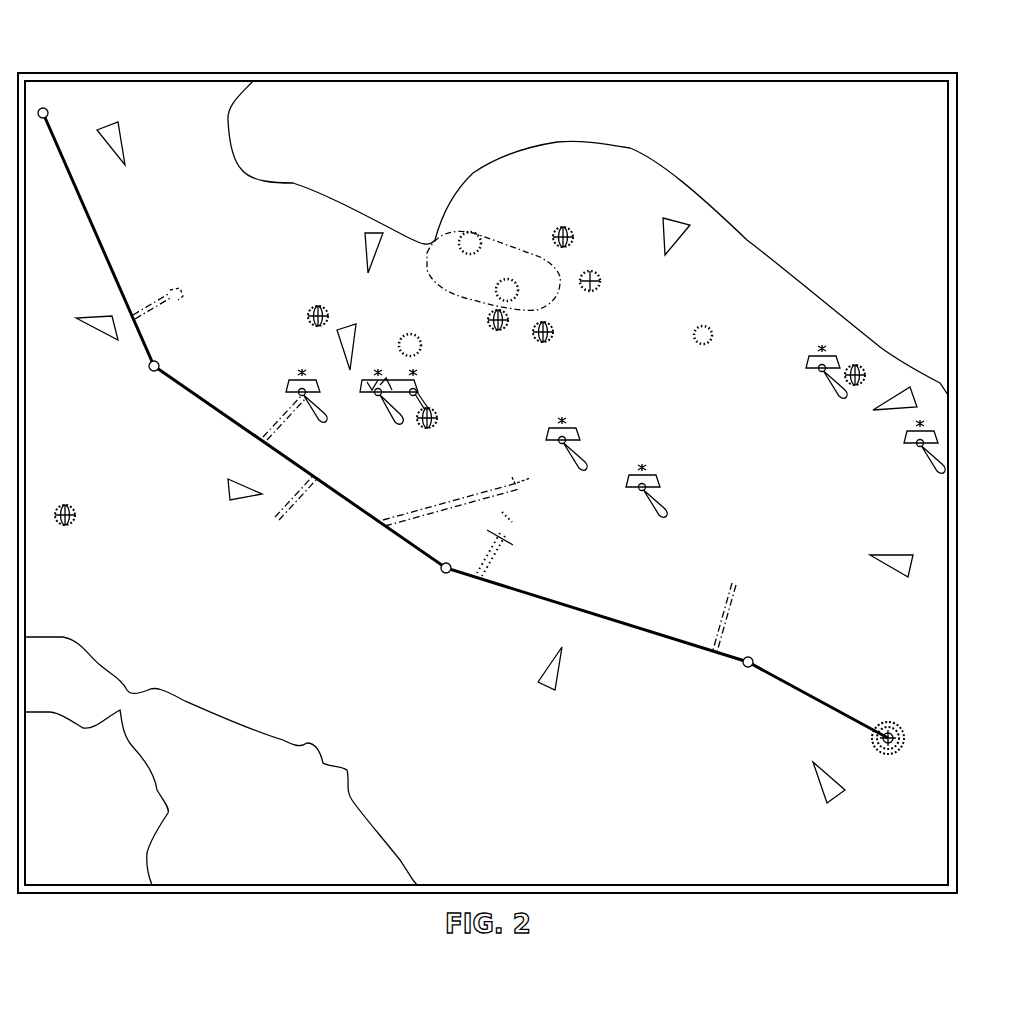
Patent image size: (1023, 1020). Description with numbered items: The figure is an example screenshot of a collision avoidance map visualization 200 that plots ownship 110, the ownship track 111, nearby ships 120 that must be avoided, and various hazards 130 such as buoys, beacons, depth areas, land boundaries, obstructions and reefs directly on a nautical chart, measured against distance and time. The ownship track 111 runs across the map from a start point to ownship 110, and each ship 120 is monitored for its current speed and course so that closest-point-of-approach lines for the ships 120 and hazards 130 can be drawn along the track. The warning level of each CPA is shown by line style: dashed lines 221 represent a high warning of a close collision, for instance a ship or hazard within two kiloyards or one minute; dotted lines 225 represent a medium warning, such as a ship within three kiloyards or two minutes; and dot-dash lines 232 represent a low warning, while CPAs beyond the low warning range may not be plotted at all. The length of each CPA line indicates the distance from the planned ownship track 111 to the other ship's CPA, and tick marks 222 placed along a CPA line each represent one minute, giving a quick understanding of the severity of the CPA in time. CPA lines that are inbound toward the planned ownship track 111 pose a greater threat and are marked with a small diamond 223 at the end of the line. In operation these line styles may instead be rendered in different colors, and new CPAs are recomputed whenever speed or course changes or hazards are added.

The collision avoidance screenshot with map visualization 200 is at (116, 52).
The ownship 110 is at (890, 755).
The ownship track 111 is at (640, 637).
The nearby ships 120 is at (357, 335).
The hazards 130 is at (470, 232).
The dashed lines 221 is at (155, 300).
The tick marks 222 is at (488, 530).
The small diamond 223 is at (180, 290).
The dotted lines 225 is at (492, 560).
The dot-dash lines 232 is at (288, 425).